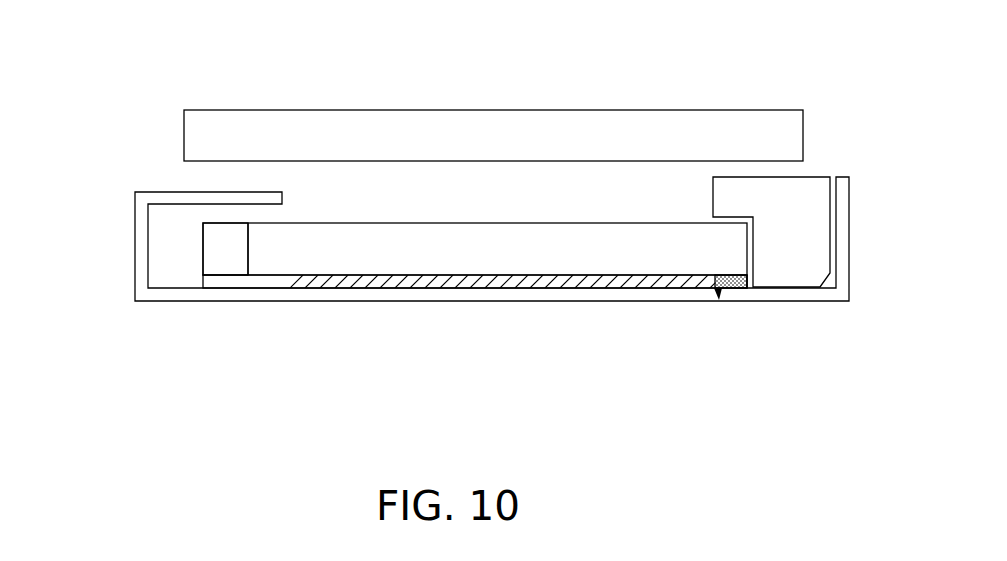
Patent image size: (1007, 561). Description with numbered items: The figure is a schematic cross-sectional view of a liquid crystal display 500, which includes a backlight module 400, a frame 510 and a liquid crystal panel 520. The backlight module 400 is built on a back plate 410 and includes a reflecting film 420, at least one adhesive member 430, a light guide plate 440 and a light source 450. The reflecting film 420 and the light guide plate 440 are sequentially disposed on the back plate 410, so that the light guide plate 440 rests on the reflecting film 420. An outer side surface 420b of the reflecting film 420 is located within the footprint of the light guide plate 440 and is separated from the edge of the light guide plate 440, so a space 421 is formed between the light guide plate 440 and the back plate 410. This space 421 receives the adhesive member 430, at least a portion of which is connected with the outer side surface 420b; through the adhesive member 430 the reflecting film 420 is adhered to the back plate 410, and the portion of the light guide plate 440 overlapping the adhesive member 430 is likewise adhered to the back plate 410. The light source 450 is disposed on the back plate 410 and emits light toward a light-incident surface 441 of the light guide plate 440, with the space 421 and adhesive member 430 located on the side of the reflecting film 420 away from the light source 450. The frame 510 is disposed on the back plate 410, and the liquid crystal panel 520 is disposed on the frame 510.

The liquid crystal display 500 is at (125, 55).
The liquid crystal panel 520 is at (656, 123).
The frame 510 is at (818, 176).
The backlight module 400 is at (118, 246).
The back plate 410 is at (176, 292).
The reflecting film 420 is at (481, 285).
The outer side surface 420b is at (736, 300).
The space 421 is at (718, 292).
The adhesive member 430 is at (740, 297).
The light guide plate 440 is at (511, 237).
The light-incident surface 441 is at (250, 250).
The light source 450 is at (230, 257).